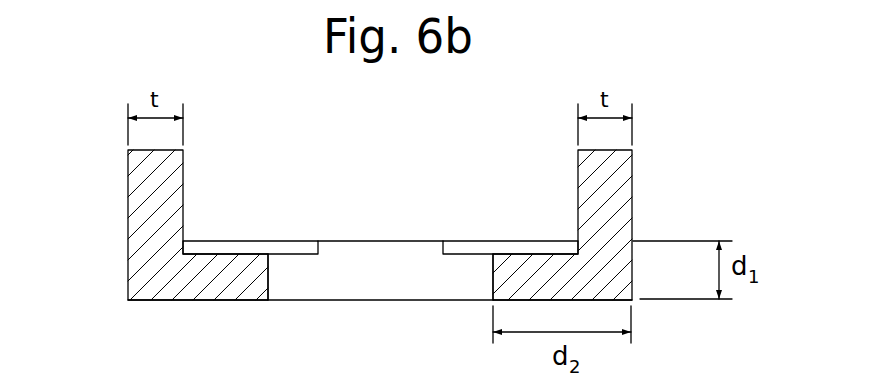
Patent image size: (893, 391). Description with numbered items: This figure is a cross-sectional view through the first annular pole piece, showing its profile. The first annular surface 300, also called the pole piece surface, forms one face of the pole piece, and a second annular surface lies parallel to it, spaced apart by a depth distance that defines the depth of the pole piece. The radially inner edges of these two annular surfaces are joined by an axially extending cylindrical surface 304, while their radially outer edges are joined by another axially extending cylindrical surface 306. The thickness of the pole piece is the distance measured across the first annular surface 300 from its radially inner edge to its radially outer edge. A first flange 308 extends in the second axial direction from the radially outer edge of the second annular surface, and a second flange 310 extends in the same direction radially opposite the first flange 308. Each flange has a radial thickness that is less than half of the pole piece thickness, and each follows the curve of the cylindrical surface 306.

The first annular surface 300 is at (198, 301).
The axially extending cylindrical surface 304 is at (270, 273).
The axially extending cylindrical surface 306 is at (128, 256).
The first flange 308 is at (623, 192).
The second flange 310 is at (148, 194).